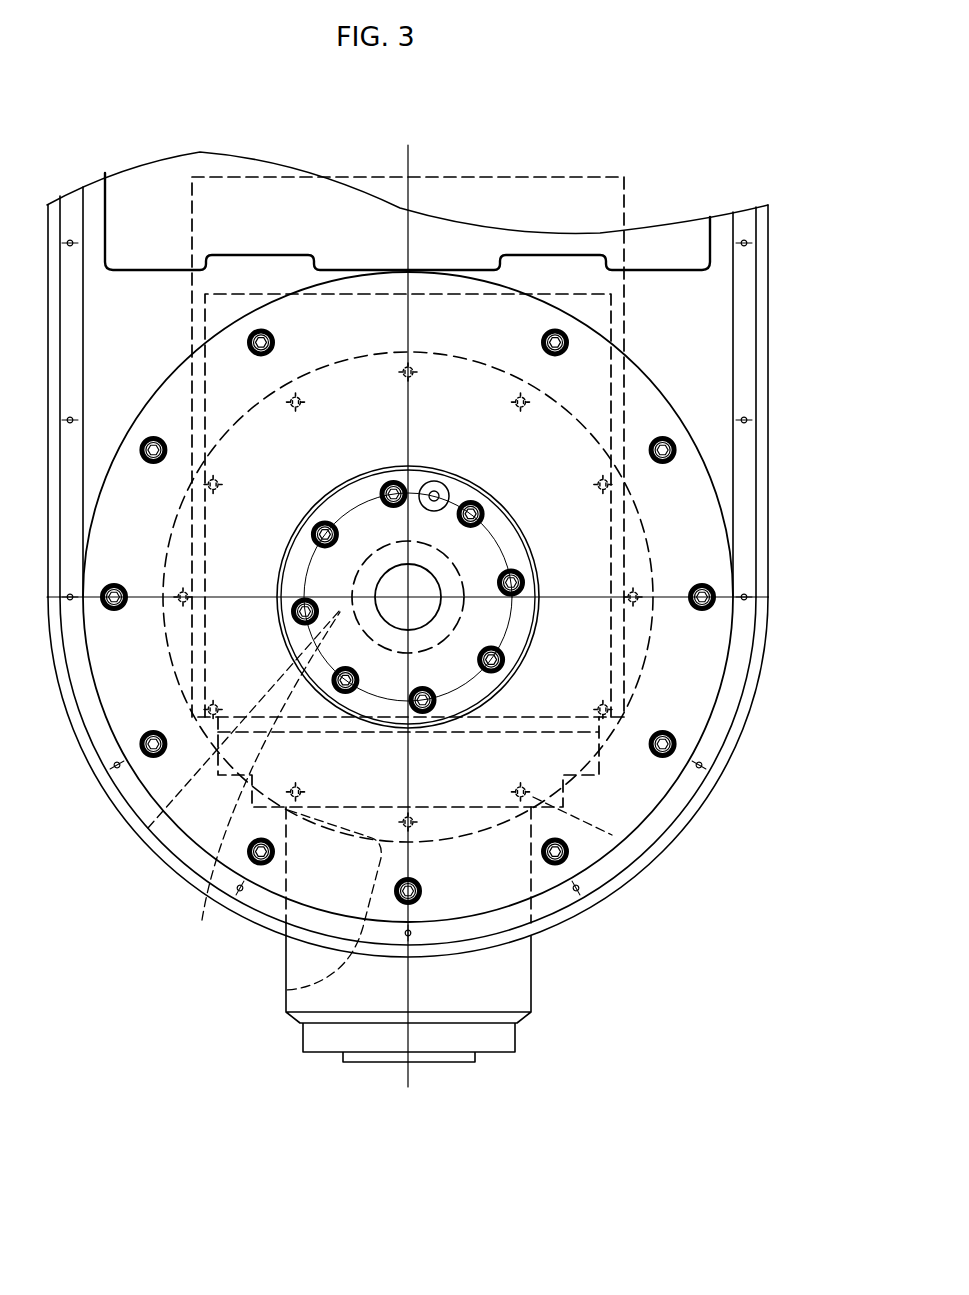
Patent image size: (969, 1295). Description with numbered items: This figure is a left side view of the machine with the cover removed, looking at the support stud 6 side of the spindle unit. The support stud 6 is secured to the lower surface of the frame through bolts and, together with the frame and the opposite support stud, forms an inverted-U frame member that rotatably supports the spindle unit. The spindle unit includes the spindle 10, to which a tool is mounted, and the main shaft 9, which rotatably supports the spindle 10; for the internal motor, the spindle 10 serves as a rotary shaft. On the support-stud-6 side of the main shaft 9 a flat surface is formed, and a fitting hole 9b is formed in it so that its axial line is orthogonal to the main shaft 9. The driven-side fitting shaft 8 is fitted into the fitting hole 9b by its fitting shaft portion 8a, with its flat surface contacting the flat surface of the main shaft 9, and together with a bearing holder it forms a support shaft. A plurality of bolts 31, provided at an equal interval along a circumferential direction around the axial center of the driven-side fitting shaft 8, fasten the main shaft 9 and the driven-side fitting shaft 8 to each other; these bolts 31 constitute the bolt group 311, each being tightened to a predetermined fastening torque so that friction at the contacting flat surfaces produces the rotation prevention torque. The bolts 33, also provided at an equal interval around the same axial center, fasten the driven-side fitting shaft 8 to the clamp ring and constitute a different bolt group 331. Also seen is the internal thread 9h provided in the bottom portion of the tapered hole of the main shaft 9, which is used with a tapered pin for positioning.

The support stud 6 is at (173, 863).
The driven-side fitting shaft 8 is at (272, 990).
The fitting shaft portion 8a is at (148, 828).
The main shaft 9 is at (192, 206).
The fitting hole 9b is at (200, 922).
The internal thread 9h is at (434, 481).
The spindle 10 is at (437, 1040).
The bolt 31 is at (437, 712).
The bolt 33 is at (622, 868).
The bolt group 311 is at (655, 978).
The bolt group 331 is at (702, 920).